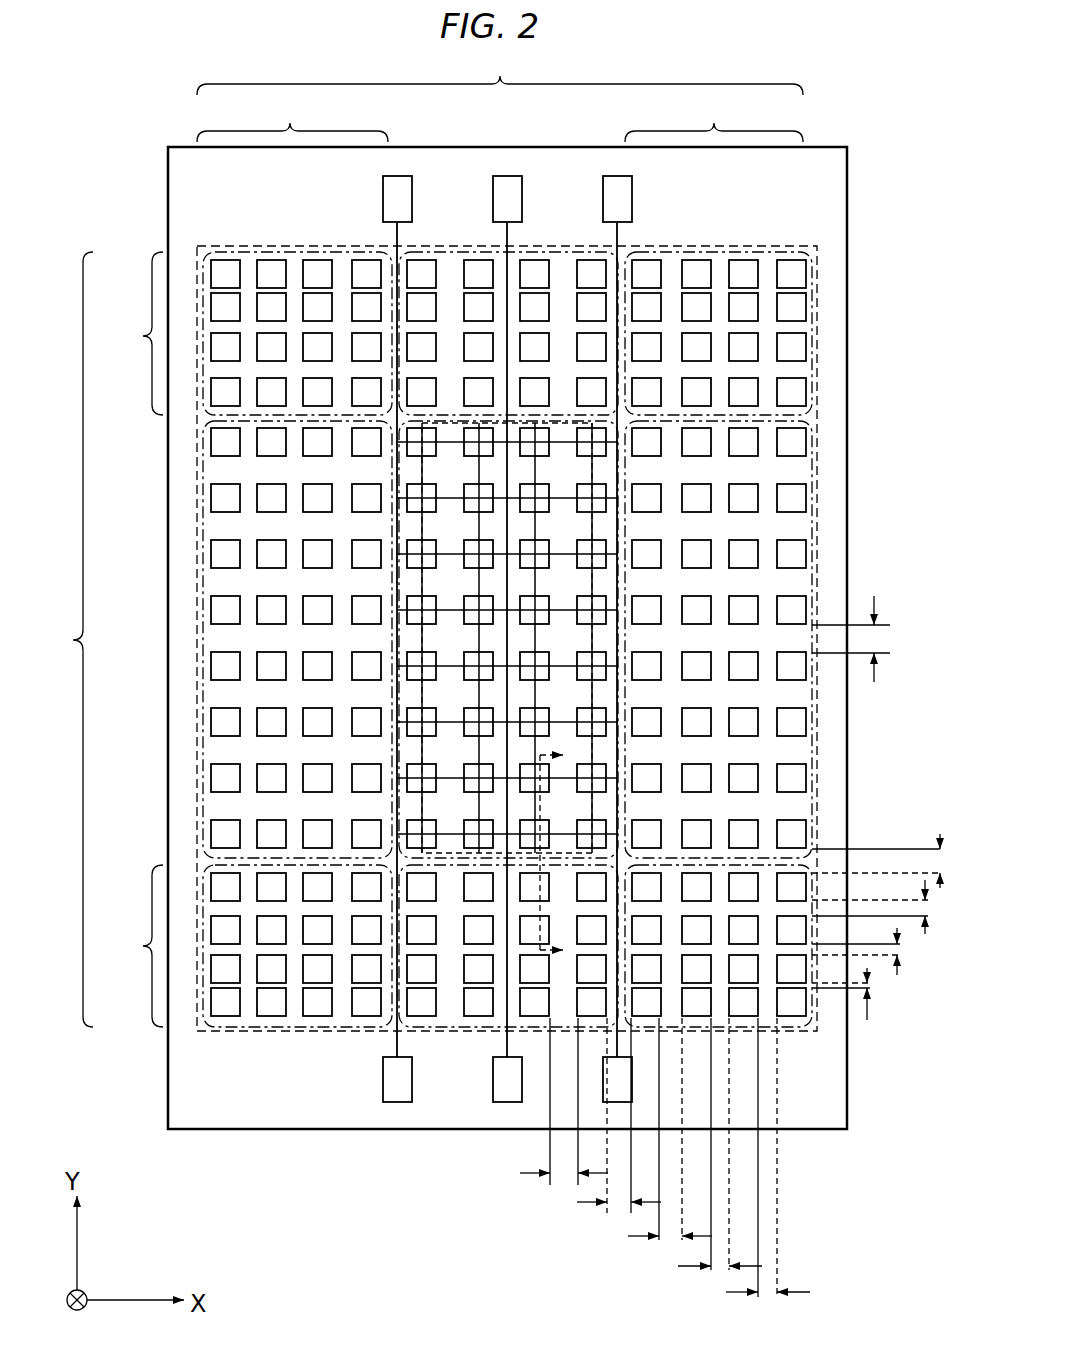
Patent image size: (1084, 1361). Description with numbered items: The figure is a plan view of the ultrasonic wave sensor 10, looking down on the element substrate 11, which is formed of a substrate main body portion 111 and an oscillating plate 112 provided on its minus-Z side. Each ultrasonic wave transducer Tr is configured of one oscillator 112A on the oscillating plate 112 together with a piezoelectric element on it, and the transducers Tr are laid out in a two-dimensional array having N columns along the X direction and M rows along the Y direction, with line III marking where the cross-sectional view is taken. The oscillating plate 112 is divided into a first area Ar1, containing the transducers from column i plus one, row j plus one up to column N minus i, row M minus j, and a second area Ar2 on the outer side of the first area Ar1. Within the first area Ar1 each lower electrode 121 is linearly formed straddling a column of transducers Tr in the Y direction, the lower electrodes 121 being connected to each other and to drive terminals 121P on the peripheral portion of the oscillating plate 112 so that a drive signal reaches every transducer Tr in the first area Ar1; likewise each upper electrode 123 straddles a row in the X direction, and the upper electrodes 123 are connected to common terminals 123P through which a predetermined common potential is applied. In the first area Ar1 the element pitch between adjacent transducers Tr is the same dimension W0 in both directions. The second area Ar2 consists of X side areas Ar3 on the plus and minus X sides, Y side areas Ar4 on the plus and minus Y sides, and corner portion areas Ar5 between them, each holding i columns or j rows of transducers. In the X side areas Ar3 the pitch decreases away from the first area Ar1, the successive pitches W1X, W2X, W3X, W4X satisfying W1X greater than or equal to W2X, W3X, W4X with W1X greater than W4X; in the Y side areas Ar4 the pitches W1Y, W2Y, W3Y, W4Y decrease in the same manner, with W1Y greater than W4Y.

The ultrasonic wave sensor 10 is at (447, 597).
The element substrate 11 is at (447, 638).
The substrate main body portion 111 is at (447, 638).
The oscillating plate 112 is at (507, 638).
The oscillator 112A is at (603, 492).
The ultrasonic wave transducer Tr is at (578, 638).
The lower electrode 121 is at (536, 693).
The upper electrode 123 is at (565, 610).
The drive terminal 121P is at (508, 1090).
The common terminal 123P is at (397, 1090).
The first area Ar1 is at (447, 406).
The second area Ar2 is at (573, 239).
The X side area Ar3 is at (818, 578).
The Y side area Ar4 is at (547, 241).
The corner portion area Ar5 is at (253, 249).
The line III is at (551, 855).
The number of columns N is at (500, 70).
The number of rows M is at (70, 639).
The column count of X side area i is at (500, 118).
The row count of Y side area j is at (142, 639).
The element pitch W0 is at (716, 902).
The element pitch between X=i and X=i+1 W1X is at (608, 1126).
The element pitch between X=i-1 and X=i W2X is at (658, 1141).
The element pitch between X=i-2 and X=i-1 W3X is at (711, 1156).
The element pitch between X=i-3 and X=i-2 W4X is at (762, 1171).
The element pitch between Y=j and Y=j+1 W1Y is at (876, 849).
The element pitch between Y=j-1 and Y=j W2Y is at (883, 927).
The element pitch between Y=j-2 and Y=j-1 W3Y is at (871, 966).
The element pitch between Y=j-3 and Y=j-2 W4Y is at (863, 1004).